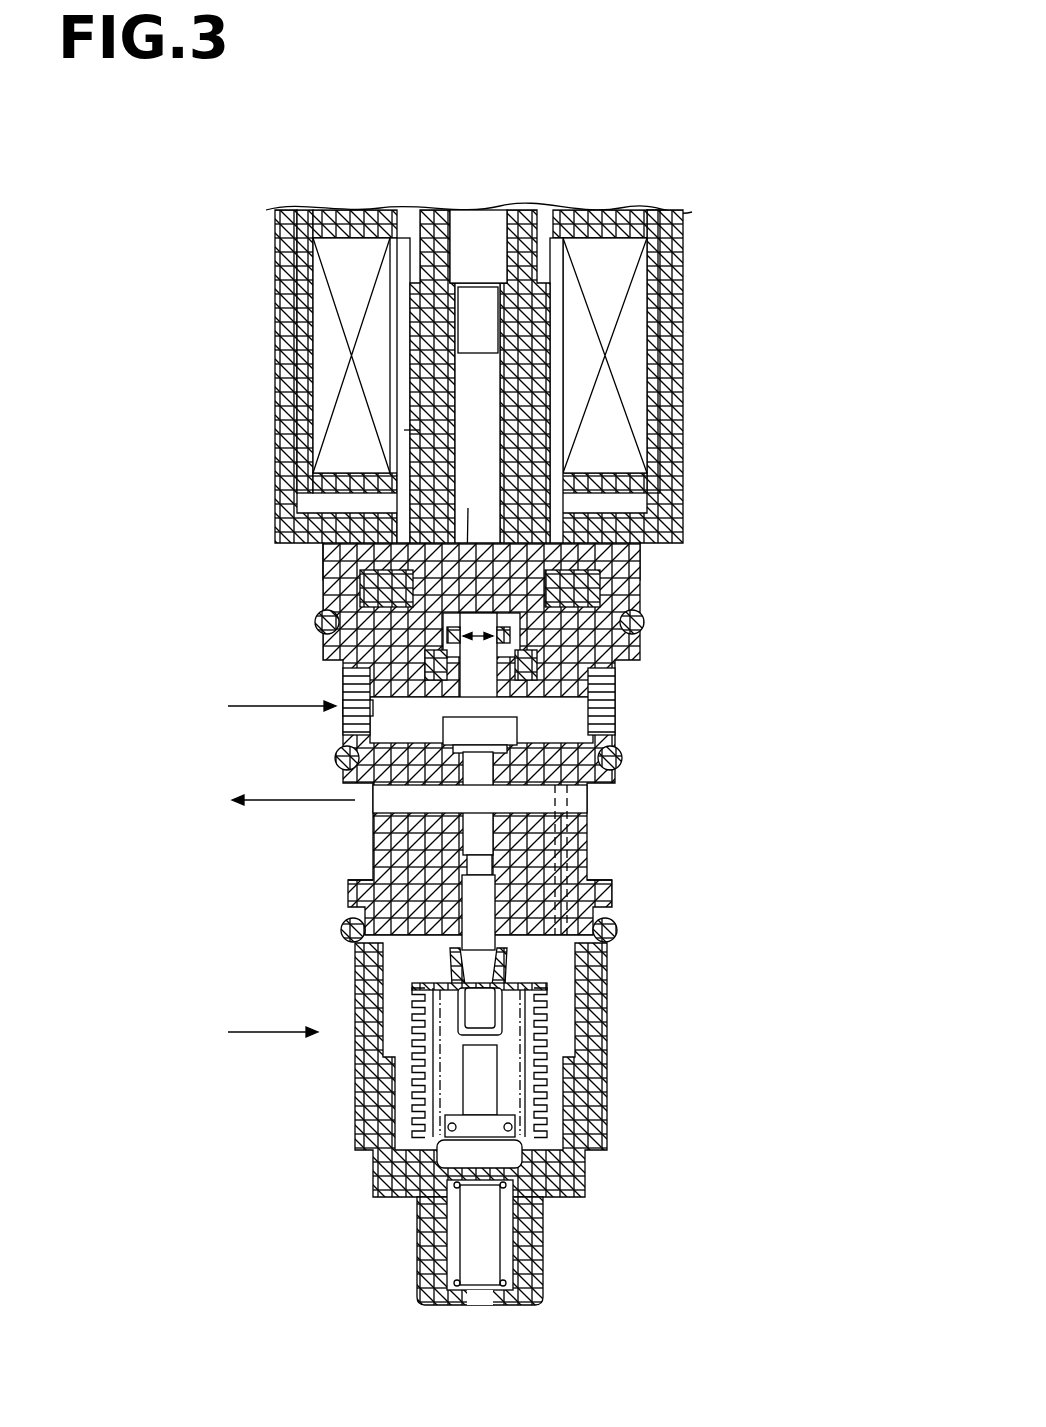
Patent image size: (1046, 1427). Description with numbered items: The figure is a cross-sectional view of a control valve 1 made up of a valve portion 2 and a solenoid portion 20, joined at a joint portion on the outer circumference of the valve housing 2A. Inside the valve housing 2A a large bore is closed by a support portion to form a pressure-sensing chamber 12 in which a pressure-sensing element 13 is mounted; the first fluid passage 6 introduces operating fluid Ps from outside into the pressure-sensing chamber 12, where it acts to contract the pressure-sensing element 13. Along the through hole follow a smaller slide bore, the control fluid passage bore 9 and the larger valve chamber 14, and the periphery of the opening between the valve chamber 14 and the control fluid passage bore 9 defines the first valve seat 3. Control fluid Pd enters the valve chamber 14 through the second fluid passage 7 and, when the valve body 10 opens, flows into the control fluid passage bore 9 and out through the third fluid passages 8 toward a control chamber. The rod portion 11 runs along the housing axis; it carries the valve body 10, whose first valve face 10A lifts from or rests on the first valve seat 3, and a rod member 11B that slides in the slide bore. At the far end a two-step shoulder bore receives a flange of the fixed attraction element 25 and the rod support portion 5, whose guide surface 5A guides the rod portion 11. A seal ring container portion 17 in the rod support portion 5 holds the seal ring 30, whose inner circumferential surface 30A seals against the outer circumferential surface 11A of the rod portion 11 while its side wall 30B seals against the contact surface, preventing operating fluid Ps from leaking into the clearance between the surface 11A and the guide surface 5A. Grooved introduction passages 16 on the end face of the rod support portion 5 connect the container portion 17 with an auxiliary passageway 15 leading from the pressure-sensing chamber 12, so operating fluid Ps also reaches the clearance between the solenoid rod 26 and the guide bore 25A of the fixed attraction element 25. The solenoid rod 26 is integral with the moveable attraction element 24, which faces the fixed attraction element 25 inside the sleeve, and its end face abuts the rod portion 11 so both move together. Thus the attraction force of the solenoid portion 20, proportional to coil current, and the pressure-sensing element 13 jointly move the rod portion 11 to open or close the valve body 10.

The control valve 1 is at (451, 692).
The valve portion 2 is at (461, 881).
The valve housing 2A is at (604, 884).
The first valve seat 3 is at (472, 913).
The rod support portion 5 is at (586, 574).
The guide surface 5A is at (442, 733).
The first fluid passage 6 is at (609, 1040).
The second fluid passage 7 is at (612, 708).
The third fluid passage 8 is at (592, 800).
The control fluid passage bore 9 is at (596, 924).
The valve body 10 is at (615, 745).
The first valve face 10A is at (428, 822).
The rod portion 11 is at (500, 660).
The outer circumferential surface 11A is at (356, 700).
The rod member 11B is at (404, 1058).
The pressure-sensing chamber 12 is at (556, 1000).
The pressure-sensing element 13 is at (548, 1125).
The valve chamber 14 is at (336, 760).
The auxiliary passageway 15 is at (570, 832).
The introduction passage 16 is at (662, 530).
The seal ring container portion 17 is at (400, 596).
The solenoid portion 20 is at (425, 362).
The moveable attraction element 24 is at (523, 228).
The fixed attraction element 25 is at (430, 525).
The guide bore 25A is at (410, 430).
The solenoid rod 26 is at (484, 386).
The seal ring 30 is at (424, 662).
The inner circumferential surface 30A is at (536, 664).
The seal 30B is at (508, 632).